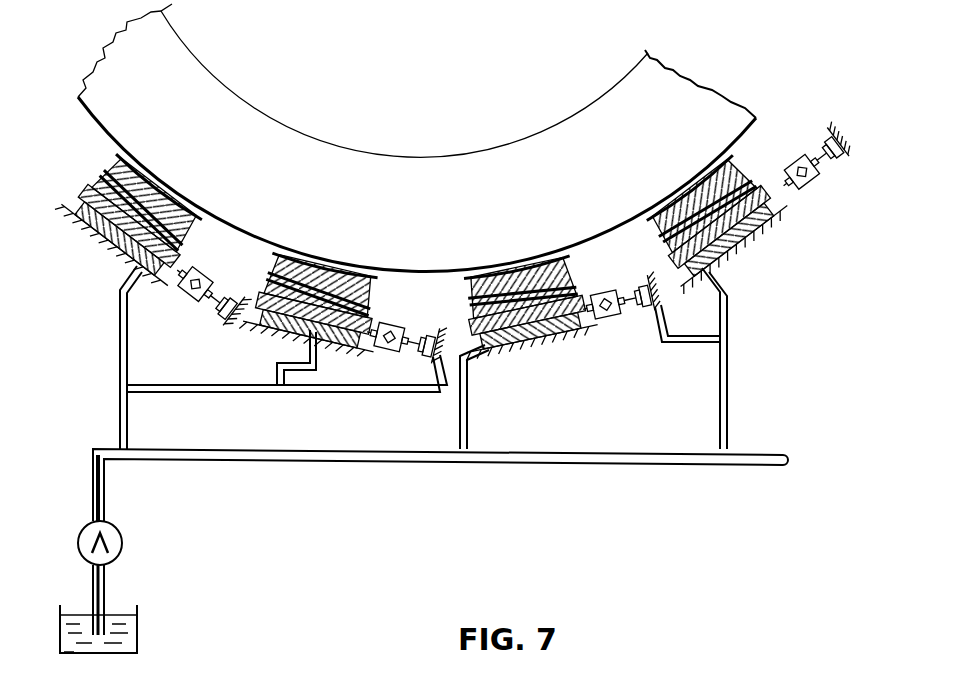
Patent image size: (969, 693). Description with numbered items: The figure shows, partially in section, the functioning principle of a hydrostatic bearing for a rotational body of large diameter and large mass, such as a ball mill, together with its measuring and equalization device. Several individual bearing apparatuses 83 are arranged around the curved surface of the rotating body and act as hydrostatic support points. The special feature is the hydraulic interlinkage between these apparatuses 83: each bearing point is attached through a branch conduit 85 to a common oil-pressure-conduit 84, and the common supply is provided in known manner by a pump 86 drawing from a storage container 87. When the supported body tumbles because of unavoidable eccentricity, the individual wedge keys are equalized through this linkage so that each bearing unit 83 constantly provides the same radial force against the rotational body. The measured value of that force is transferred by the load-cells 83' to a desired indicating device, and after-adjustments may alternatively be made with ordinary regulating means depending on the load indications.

The apparatus 83 is at (423, 253).
The load-cells 83' is at (510, 239).
The common oil-pressure-conduit 84 is at (766, 468).
The branch conduits 85 is at (120, 353).
The pump 86 is at (123, 541).
The storage container 87 is at (138, 631).